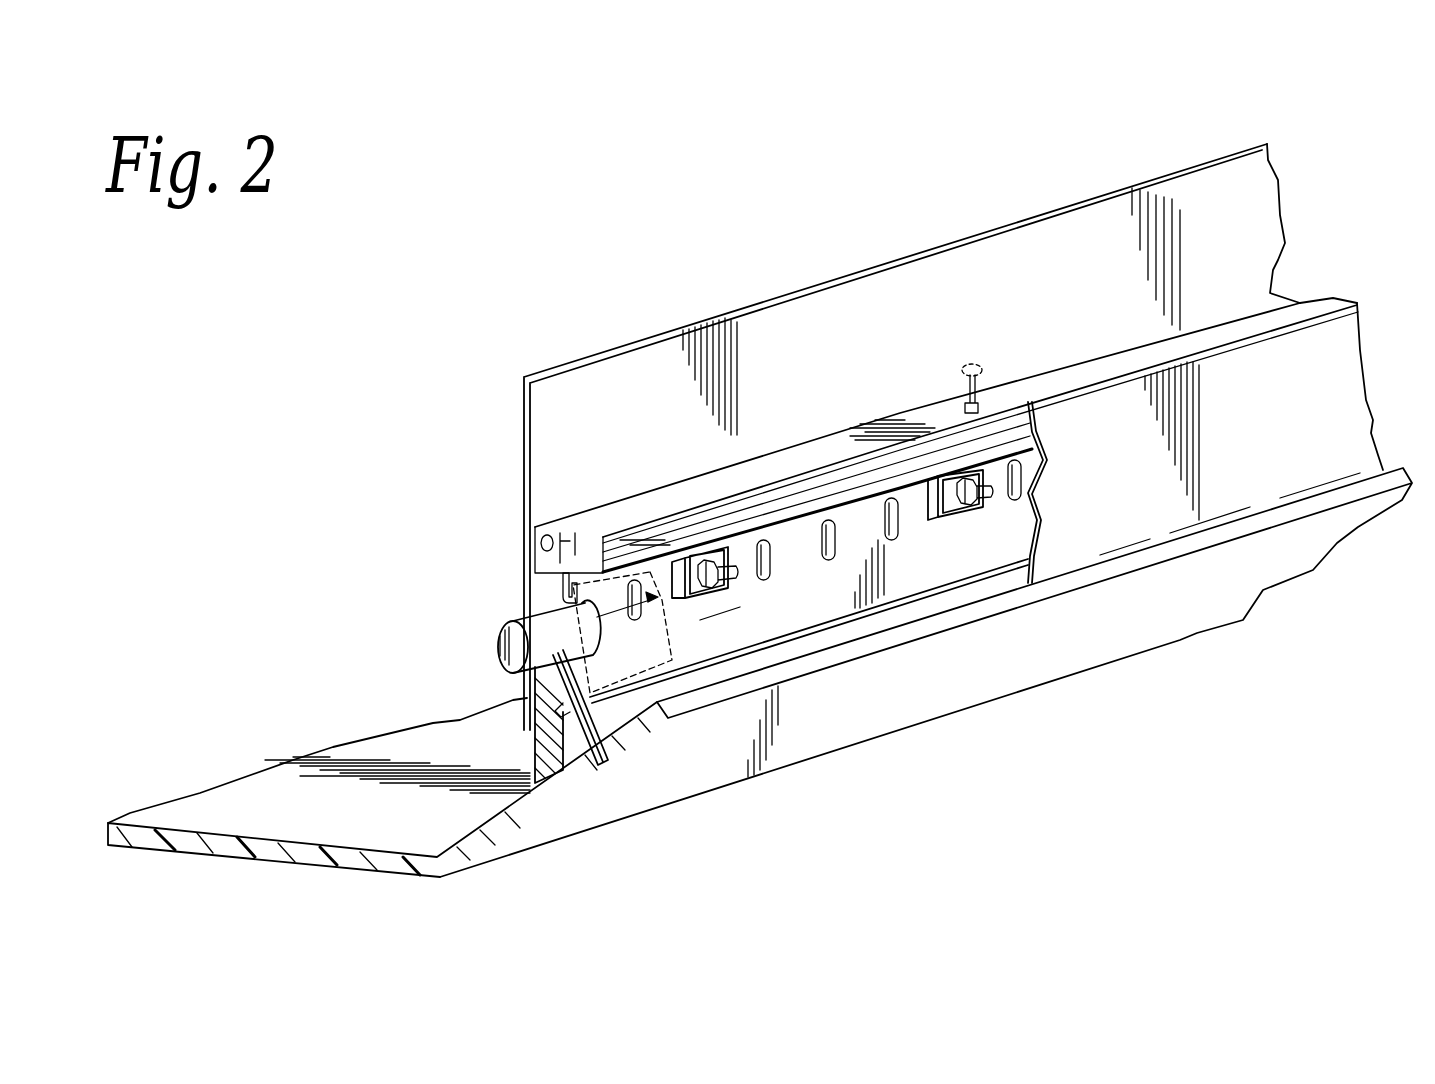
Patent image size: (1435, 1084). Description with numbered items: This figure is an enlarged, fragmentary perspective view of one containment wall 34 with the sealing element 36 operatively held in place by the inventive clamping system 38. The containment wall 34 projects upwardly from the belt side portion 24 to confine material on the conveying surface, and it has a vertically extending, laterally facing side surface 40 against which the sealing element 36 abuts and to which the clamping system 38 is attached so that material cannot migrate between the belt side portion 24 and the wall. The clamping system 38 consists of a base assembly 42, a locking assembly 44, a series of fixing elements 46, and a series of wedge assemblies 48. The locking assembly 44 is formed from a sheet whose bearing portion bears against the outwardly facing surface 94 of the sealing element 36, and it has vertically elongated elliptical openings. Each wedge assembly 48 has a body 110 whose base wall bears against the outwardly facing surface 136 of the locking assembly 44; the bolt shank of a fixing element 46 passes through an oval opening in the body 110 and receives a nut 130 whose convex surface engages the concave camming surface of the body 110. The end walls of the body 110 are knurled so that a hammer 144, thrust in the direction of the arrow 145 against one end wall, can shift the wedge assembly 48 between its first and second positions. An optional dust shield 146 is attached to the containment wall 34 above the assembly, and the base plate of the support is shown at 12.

The base plate 12 is at (282, 833).
The belt side portion 24 is at (1118, 635).
The containment wall 34 is at (1250, 233).
The sealing element 36 is at (567, 727).
The clamping system 38 is at (822, 573).
The side surface 40 is at (756, 332).
The base assembly 42 is at (547, 587).
The locking assembly 44 is at (925, 578).
The fixing element 46 is at (712, 568).
The wedge assembly 48 is at (661, 566).
The outwardly facing surface 94 is at (570, 745).
The body 110 is at (672, 598).
The nut 130 is at (750, 633).
The outwardly facing surface 136 is at (685, 628).
The hammer 144 is at (622, 655).
The arrow 145 is at (659, 617).
The dust shield 146 is at (1078, 421).